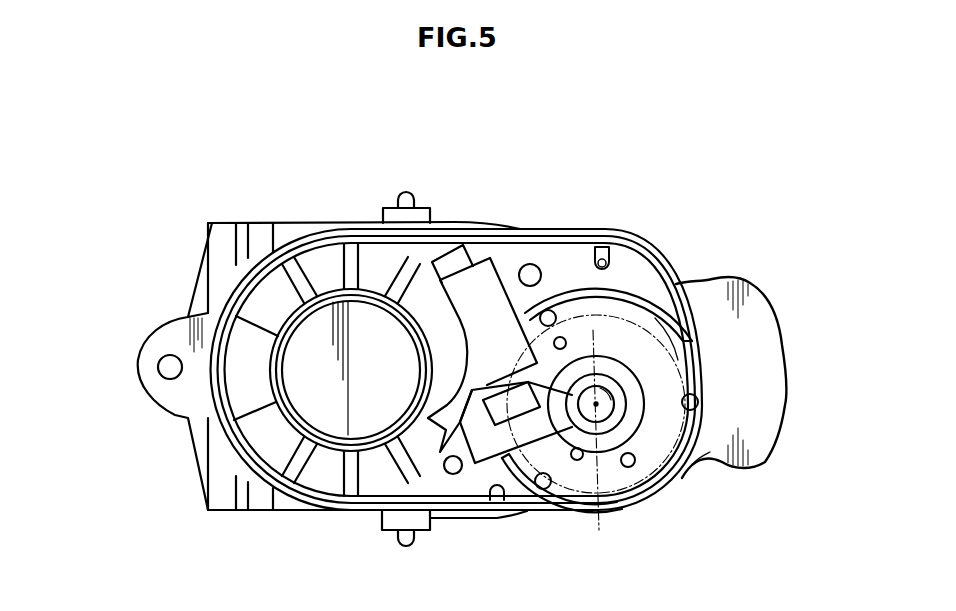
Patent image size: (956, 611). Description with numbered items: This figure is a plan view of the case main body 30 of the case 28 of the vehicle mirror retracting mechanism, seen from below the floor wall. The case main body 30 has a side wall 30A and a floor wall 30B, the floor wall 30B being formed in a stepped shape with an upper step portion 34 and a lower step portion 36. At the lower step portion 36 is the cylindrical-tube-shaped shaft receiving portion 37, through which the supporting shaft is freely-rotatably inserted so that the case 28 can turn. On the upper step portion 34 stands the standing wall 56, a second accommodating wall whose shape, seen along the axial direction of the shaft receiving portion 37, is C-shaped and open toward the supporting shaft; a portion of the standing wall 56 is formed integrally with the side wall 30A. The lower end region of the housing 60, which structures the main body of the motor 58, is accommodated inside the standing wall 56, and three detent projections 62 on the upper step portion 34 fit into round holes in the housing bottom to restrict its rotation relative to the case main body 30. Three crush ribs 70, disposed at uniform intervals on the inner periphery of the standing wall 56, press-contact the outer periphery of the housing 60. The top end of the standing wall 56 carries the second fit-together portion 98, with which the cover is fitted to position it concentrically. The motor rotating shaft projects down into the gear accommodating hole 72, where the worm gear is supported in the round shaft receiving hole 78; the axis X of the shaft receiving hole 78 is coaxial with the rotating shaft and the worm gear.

The case main body 30 is at (305, 377).
The case 28 is at (212, 492).
The side wall 30A is at (356, 230).
The floor wall 30B is at (660, 382).
The upper step portion 34 is at (778, 377).
The lower step portion 36 is at (245, 383).
The shaft receiving portion 37 is at (322, 443).
The standing wall 56 is at (597, 340).
The second fit-together portion 98 is at (582, 293).
The motor 58 is at (650, 335).
The housing 60 is at (662, 470).
The detent projections 62 is at (553, 343).
The crush ribs 70 is at (550, 308).
The gear accommodating hole 72 is at (706, 450).
The shaft receiving hole 78 is at (598, 402).
The axis X is at (595, 441).